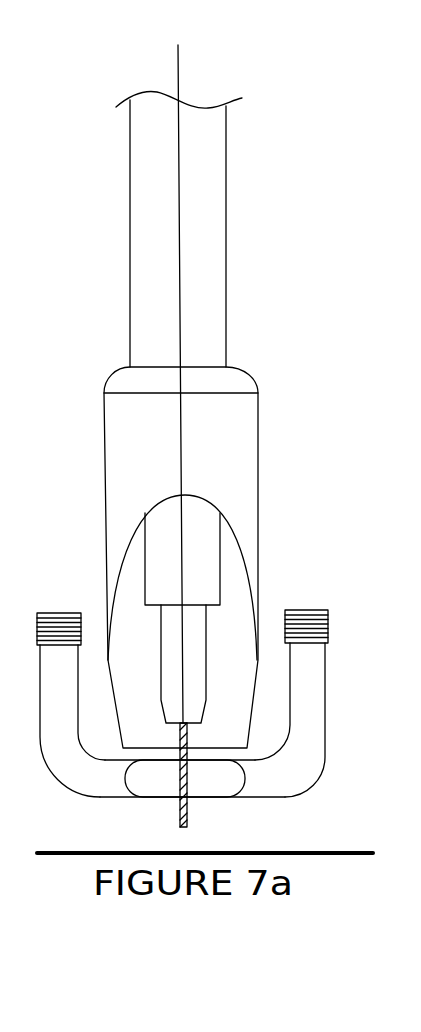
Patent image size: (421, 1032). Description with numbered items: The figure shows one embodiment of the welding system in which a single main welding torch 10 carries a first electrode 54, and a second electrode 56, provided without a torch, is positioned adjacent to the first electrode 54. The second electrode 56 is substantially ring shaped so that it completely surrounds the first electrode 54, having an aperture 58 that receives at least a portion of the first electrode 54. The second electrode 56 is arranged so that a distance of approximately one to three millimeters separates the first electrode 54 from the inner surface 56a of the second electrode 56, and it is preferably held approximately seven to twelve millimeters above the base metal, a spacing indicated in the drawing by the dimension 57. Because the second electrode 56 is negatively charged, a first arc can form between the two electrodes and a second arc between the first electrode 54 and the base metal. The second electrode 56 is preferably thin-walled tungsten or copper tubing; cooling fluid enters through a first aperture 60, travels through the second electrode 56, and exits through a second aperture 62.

The main welding torch 10 is at (226, 280).
The first electrode 54 is at (188, 807).
The second electrode 56 is at (338, 693).
The inner surface 56a is at (222, 778).
The tissue surface 57 is at (113, 800).
The aperture 58 is at (185, 778).
The first aperture 60 is at (47, 613).
The second aperture 62 is at (318, 609).